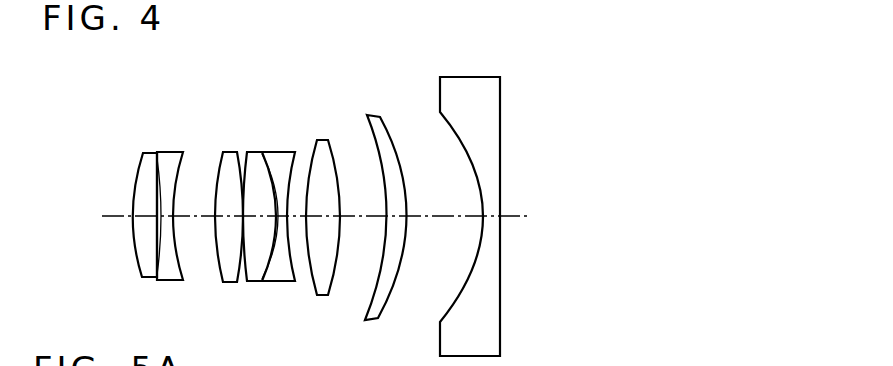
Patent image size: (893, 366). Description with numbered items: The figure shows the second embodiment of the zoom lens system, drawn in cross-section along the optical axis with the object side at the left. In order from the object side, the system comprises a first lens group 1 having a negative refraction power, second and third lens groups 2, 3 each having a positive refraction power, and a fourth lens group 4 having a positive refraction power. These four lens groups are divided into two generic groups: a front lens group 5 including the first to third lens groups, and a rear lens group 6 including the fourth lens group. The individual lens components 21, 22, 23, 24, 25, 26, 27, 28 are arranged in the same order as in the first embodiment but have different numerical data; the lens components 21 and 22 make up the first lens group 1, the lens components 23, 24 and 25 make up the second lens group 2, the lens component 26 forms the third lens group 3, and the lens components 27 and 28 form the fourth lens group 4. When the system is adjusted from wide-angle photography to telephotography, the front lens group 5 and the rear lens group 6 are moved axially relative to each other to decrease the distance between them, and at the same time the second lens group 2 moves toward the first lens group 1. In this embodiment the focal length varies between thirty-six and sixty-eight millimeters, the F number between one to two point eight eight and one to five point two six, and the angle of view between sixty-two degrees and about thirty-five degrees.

The first lens group 1 is at (138, 140).
The second lens group 2 is at (220, 140).
The third lens group 3 is at (311, 128).
The fourth lens group 4 is at (502, 66).
The front lens group 5 is at (137, 88).
The rear lens group 6 is at (397, 30).
The lens component 21 is at (142, 272).
The lens component 22 is at (167, 284).
The lens component 23 is at (225, 285).
The lens component 24 is at (252, 284).
The lens component 25 is at (287, 284).
The lens component 26 is at (322, 297).
The lens component 27 is at (370, 321).
The lens component 28 is at (500, 332).